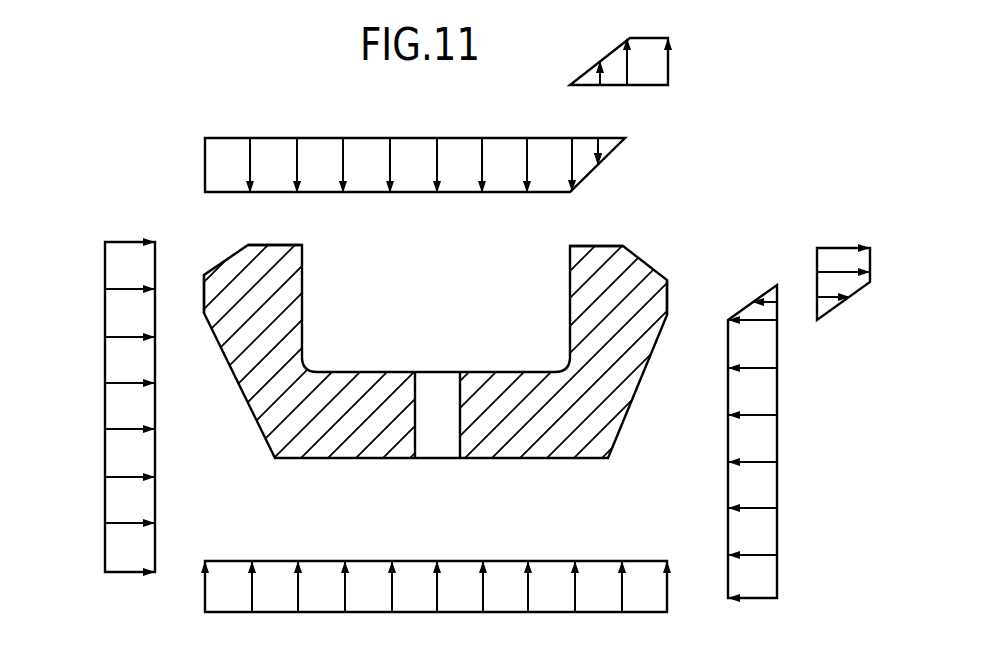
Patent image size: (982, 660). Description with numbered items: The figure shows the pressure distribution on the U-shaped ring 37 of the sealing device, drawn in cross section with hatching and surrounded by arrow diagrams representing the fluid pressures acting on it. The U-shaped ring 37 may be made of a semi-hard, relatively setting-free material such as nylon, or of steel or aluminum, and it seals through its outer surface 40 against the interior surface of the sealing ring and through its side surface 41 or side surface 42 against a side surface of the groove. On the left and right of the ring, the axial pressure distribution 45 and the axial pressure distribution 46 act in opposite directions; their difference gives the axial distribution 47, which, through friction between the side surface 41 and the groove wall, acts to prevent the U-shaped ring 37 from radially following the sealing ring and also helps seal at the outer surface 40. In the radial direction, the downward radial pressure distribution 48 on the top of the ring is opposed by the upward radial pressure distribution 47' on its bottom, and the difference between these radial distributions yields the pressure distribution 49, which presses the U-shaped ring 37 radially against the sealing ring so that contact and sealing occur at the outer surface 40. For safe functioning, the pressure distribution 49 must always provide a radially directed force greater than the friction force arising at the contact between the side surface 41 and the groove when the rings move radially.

The U-shaped ring 37 is at (292, 355).
The outer surface 40 is at (268, 245).
The side surface 41 is at (667, 300).
The side surface 42 is at (204, 292).
The axial pressure distribution 45 is at (120, 403).
The axial pressure distribution 46 is at (765, 437).
The axial distribution 47 is at (843, 260).
The radial pressure distribution 47' is at (436, 564).
The radial pressure distribution 48 is at (327, 152).
The pressure distribution 49 is at (647, 62).